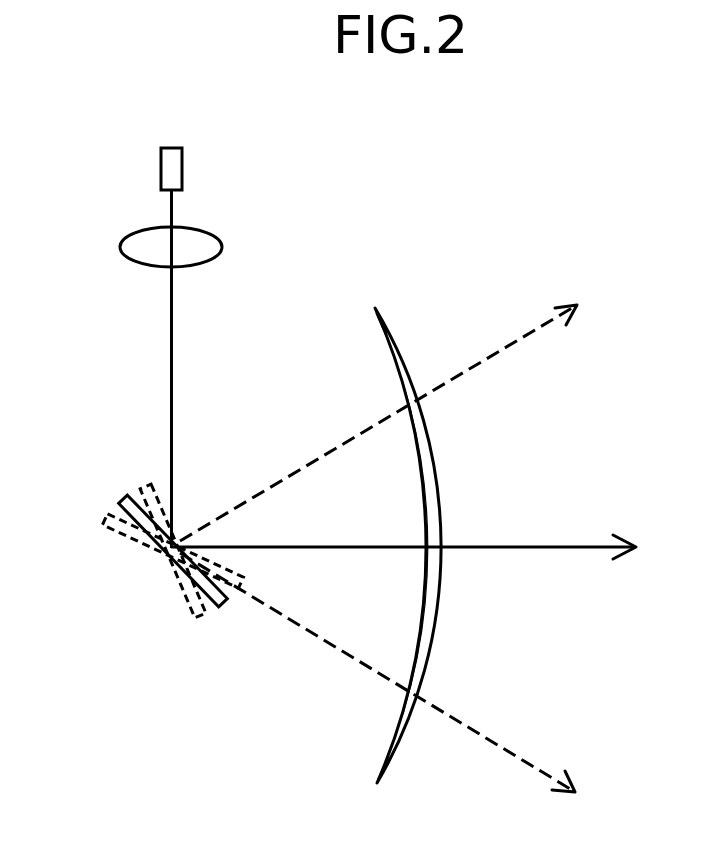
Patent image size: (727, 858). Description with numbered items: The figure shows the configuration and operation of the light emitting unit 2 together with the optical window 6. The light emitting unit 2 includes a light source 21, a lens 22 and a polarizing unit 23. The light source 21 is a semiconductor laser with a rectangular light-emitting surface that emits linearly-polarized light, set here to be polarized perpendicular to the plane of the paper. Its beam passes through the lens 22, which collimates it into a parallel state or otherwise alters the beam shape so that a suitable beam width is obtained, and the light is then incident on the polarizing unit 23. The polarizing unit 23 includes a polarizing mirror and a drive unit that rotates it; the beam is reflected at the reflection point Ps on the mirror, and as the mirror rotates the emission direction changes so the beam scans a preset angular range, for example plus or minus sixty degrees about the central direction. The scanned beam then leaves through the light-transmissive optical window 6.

The light emitting unit 2 is at (357, 163).
The light source 21 is at (160, 165).
The lens 22 is at (122, 246).
The polarizing unit 23 is at (121, 503).
The optical window 6 is at (441, 459).
The reflection point Ps is at (186, 522).